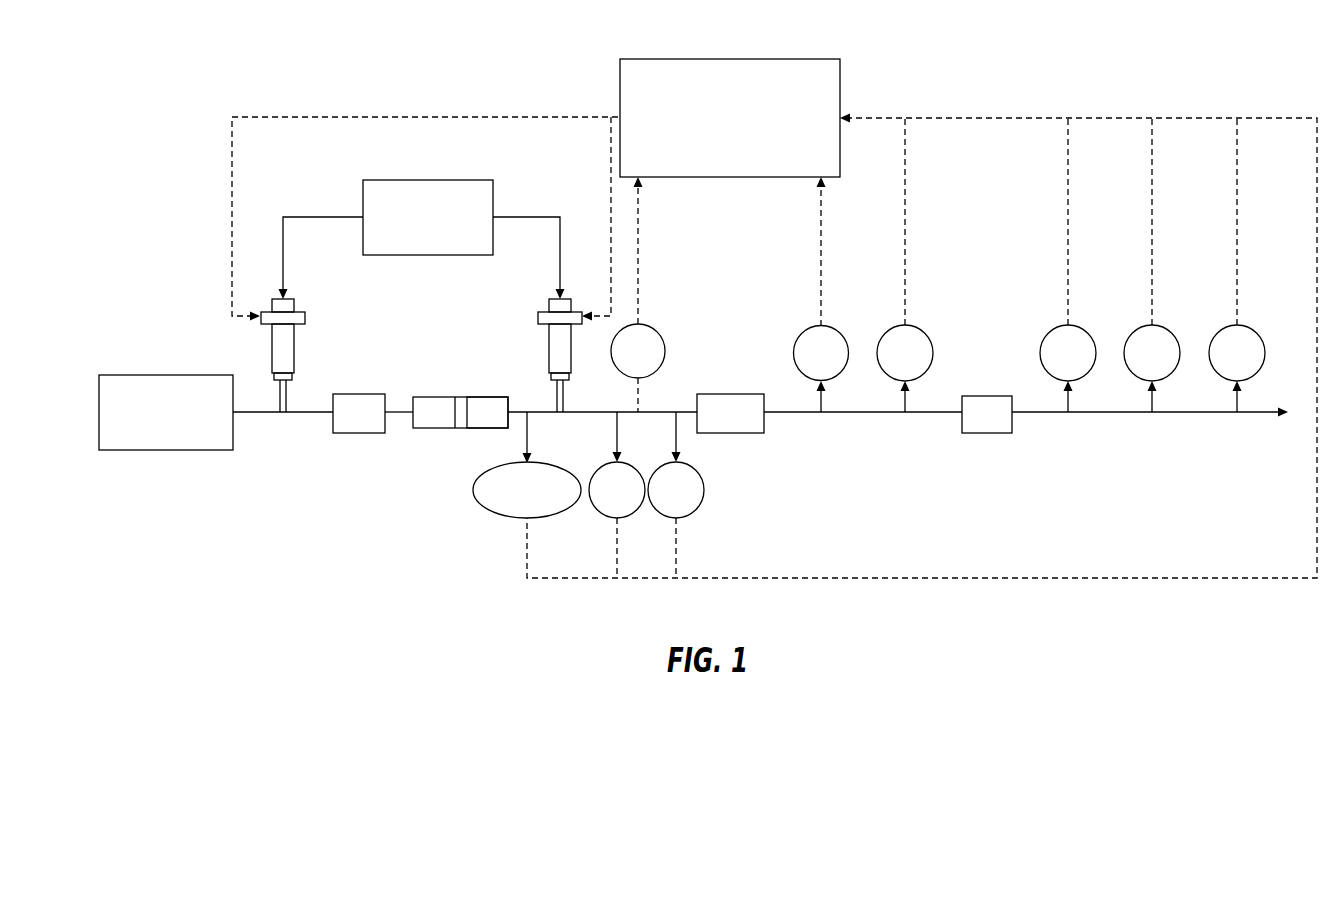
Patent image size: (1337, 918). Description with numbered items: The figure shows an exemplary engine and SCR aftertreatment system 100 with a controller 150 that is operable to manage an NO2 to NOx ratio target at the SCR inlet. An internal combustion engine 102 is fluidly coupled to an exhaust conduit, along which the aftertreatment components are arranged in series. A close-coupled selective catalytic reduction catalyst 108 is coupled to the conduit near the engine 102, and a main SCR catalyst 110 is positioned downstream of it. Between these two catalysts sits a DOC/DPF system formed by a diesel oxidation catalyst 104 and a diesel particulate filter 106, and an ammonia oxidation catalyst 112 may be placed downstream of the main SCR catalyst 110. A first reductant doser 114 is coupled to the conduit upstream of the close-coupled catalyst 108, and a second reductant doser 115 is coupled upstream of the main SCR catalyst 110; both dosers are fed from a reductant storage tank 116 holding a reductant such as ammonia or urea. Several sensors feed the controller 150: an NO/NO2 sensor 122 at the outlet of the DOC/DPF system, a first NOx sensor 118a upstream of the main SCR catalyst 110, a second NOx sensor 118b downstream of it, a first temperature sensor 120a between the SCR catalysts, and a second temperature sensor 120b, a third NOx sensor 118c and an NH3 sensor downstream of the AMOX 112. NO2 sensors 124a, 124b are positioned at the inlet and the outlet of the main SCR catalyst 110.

The engine and SCR aftertreatment system 100 is at (1194, 36).
The internal combustion engine 102 is at (166, 412).
The diesel oxidation catalyst 104 is at (434, 428).
The diesel particulate filter 106 is at (488, 397).
The close-coupled selective catalytic reduction catalyst 108 is at (358, 433).
The main SCR catalyst 110 is at (730, 413).
The ammonia oxidation catalyst 112 is at (985, 433).
The first reductant doser 114 is at (291, 346).
The second reductant doser 115 is at (553, 346).
The reductant storage tank 116 is at (422, 239).
The first NOx sensor 118a is at (608, 466).
The second NOx sensor 118b is at (889, 331).
The third NOx sensor 118c is at (1135, 326).
The first temperature sensor 120a is at (666, 351).
The second temperature sensor 120b is at (1040, 353).
The NO/NO2 sensor 122 is at (474, 498).
The first NO2 sensor 124a is at (704, 490).
The second NO2 sensor 124b is at (806, 331).
The controller 150 is at (730, 118).